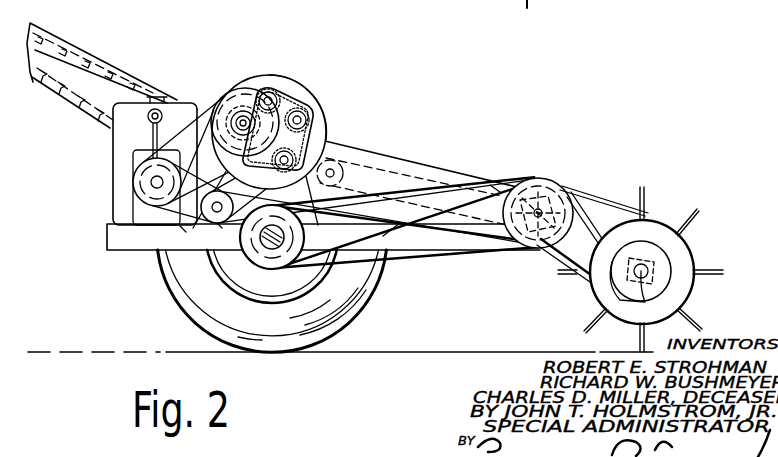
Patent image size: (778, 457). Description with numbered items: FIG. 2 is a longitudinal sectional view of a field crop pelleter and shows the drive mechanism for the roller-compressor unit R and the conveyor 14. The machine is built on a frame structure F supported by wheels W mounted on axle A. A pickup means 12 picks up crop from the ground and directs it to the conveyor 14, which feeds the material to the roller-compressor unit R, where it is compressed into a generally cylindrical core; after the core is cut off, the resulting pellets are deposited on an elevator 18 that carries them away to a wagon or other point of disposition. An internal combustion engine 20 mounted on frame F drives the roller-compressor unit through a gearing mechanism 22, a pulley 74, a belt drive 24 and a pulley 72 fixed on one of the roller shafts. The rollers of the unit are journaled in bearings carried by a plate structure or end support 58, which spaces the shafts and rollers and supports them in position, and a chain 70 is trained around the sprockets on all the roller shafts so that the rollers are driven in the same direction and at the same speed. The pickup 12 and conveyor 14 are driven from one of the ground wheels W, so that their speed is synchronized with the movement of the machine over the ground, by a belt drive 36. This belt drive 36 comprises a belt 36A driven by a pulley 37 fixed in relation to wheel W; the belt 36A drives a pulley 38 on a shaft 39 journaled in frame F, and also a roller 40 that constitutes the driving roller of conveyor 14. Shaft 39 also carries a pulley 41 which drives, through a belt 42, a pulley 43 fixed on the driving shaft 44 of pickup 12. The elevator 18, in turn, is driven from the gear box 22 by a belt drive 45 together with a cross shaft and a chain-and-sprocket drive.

The pickup means 12 is at (692, 257).
The conveyor 14 is at (415, 148).
The elevator 18 is at (93, 38).
The internal combustion engine 20 is at (122, 153).
The gearing mechanism 22 is at (140, 213).
The belt drive 24 is at (190, 112).
The belt drive 36 is at (538, 268).
The belt 36A is at (385, 238).
The pulley 37 is at (272, 262).
The pulley 38 is at (550, 180).
The shaft 39 is at (527, 258).
The roller 40 is at (495, 182).
The pulley 41 is at (554, 182).
The belt 42 is at (222, 224).
The pulley 43 is at (673, 291).
The driving shaft 44 is at (608, 314).
The belt drive 45 is at (180, 226).
The end support 58 is at (327, 123).
The chain 70 is at (277, 95).
The pulley 72 is at (232, 95).
The pulley 74 is at (133, 182).
The axle A is at (240, 245).
The frame structure F is at (453, 250).
The roller-compressor unit R is at (310, 88).
The wheels W is at (187, 303).